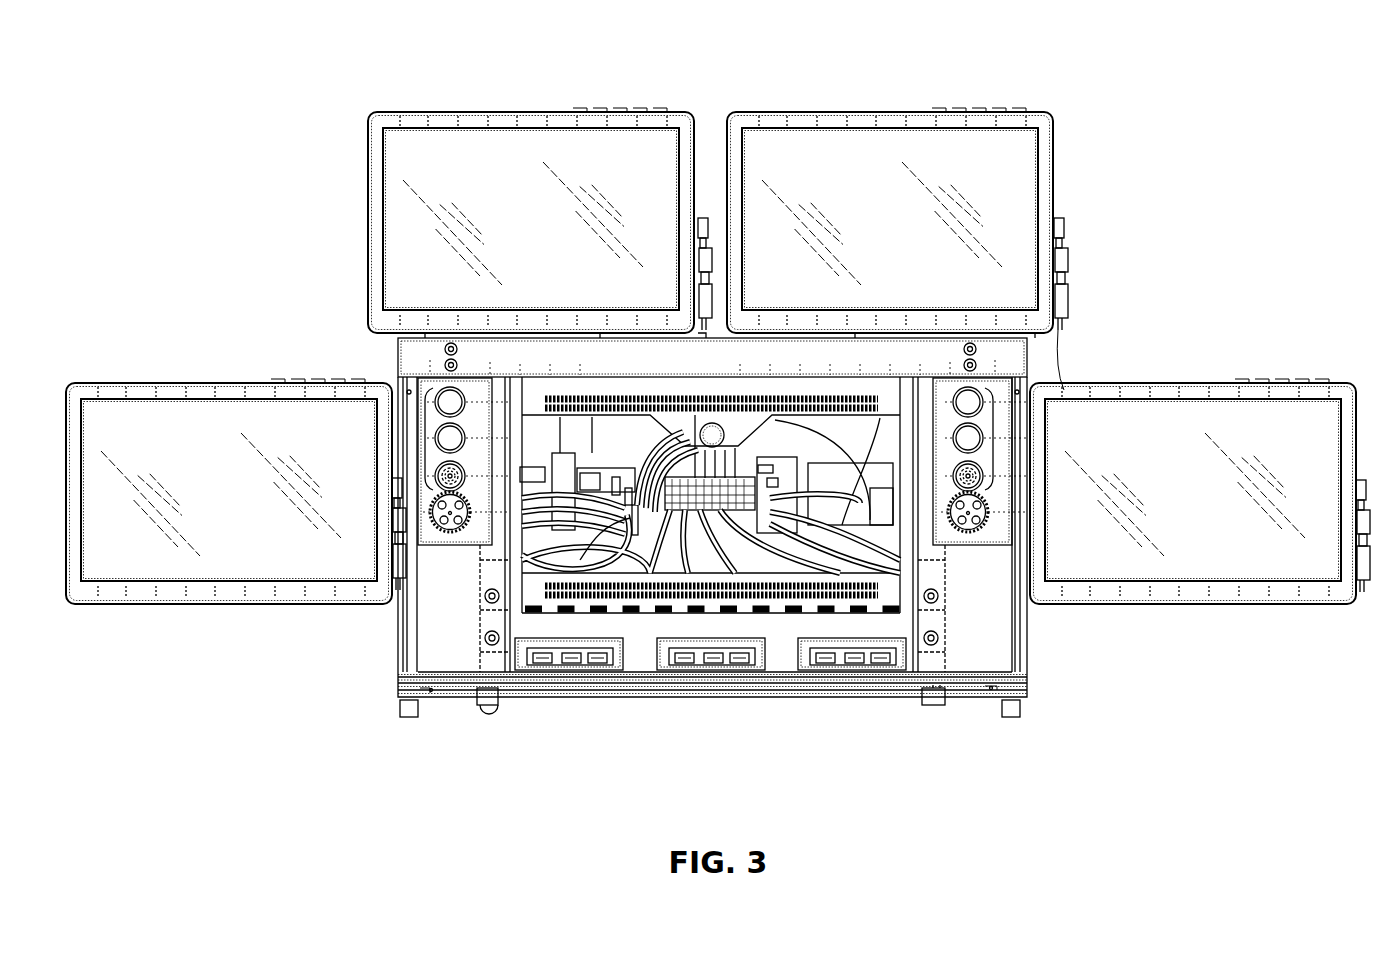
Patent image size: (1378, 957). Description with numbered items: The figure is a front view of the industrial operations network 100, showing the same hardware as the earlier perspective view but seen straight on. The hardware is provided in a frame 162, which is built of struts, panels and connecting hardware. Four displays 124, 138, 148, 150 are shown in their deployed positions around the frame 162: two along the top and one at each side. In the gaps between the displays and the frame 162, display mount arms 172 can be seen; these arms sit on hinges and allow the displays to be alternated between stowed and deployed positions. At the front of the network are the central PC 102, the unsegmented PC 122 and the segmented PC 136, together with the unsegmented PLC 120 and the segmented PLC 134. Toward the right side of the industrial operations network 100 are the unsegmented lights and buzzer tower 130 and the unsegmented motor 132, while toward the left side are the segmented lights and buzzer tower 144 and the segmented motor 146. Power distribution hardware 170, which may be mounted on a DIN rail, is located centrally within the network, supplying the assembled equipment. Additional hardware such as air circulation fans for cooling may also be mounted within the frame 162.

The industrial operations network 100 is at (300, 258).
The central PC 102 is at (680, 668).
The unsegmented PLC 120 is at (783, 483).
The unsegmented PC 122 is at (838, 668).
The display 124 is at (1190, 383).
The unsegmented lights and buzzer tower 130 is at (995, 440).
The unsegmented motor 132 is at (972, 543).
The segmented PLC 134 is at (630, 518).
The segmented PC 136 is at (560, 668).
The display 138 is at (108, 383).
The segmented lights and buzzer tower 144 is at (428, 440).
The segmented motor 146 is at (448, 543).
The display 148 is at (500, 113).
The display 150 is at (862, 113).
The frame 162 is at (955, 715).
The power distribution hardware 170 is at (713, 490).
The display mount arms 172 is at (578, 335).